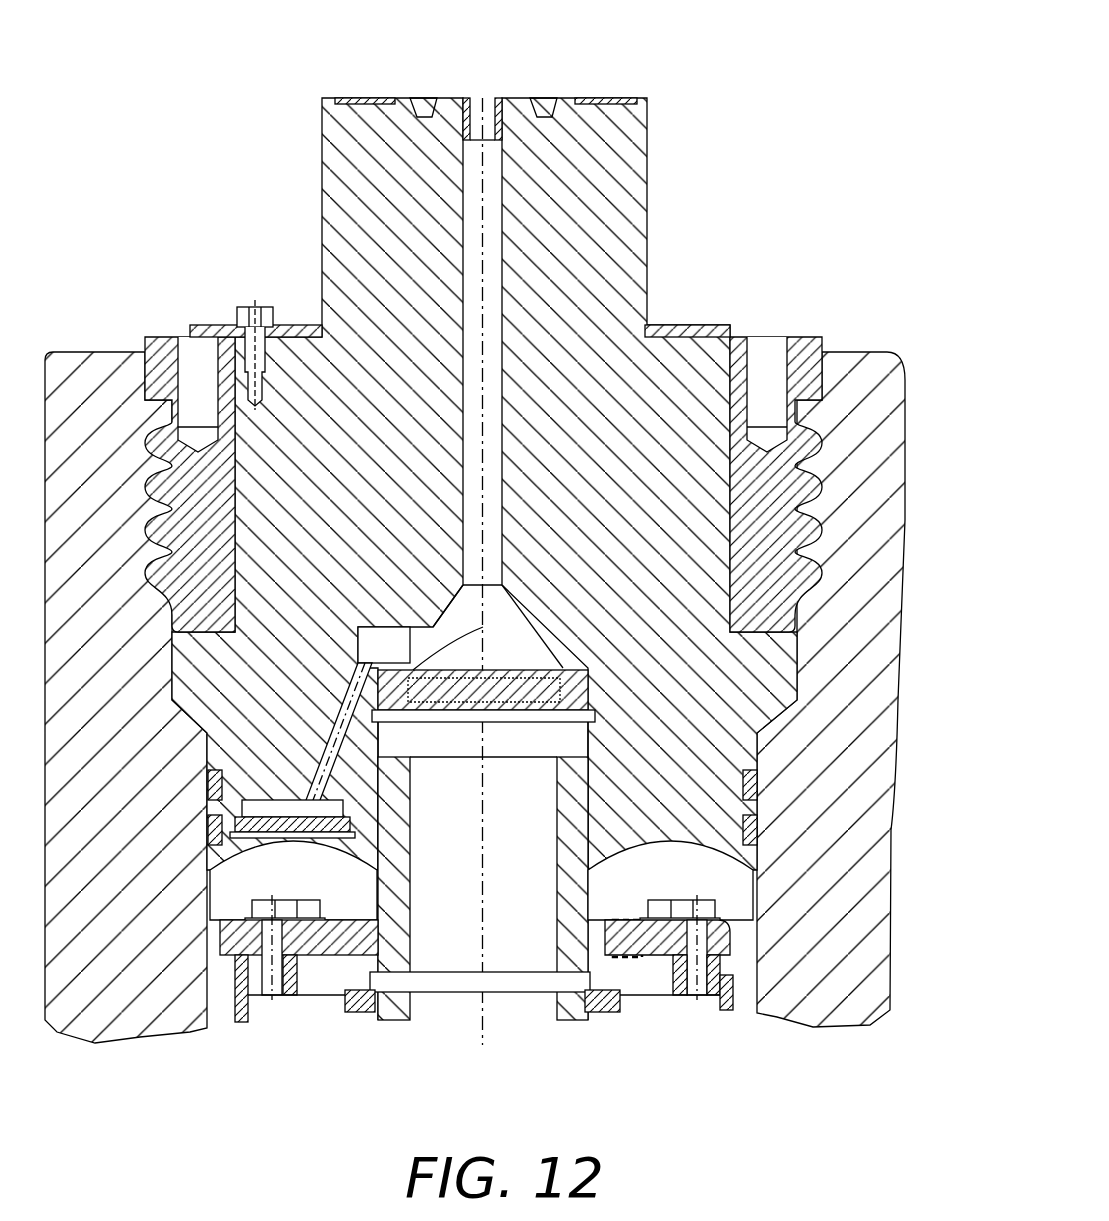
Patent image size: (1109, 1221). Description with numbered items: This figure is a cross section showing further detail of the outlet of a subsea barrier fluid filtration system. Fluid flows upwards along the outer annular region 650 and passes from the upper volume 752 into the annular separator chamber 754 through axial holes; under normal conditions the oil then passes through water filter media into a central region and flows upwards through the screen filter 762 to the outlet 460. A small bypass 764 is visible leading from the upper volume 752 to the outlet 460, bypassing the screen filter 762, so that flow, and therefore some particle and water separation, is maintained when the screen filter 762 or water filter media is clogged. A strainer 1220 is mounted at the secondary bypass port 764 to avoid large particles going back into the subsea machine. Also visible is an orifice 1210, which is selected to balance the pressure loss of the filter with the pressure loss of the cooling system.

The orifice 1210 is at (505, 98).
The outlet 460 is at (497, 215).
The bypass 764 is at (335, 708).
The strainer 1220 is at (240, 825).
The screen filter 762 is at (525, 690).
The upper volume 752 is at (316, 891).
The annular separator chamber 754 is at (305, 1003).
The outer annular region 650 is at (222, 1020).